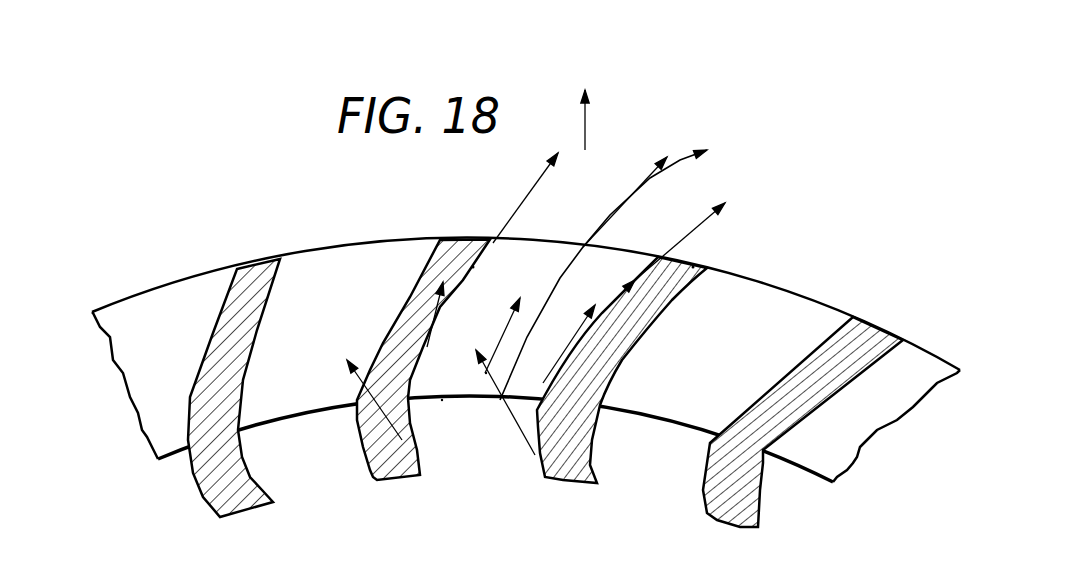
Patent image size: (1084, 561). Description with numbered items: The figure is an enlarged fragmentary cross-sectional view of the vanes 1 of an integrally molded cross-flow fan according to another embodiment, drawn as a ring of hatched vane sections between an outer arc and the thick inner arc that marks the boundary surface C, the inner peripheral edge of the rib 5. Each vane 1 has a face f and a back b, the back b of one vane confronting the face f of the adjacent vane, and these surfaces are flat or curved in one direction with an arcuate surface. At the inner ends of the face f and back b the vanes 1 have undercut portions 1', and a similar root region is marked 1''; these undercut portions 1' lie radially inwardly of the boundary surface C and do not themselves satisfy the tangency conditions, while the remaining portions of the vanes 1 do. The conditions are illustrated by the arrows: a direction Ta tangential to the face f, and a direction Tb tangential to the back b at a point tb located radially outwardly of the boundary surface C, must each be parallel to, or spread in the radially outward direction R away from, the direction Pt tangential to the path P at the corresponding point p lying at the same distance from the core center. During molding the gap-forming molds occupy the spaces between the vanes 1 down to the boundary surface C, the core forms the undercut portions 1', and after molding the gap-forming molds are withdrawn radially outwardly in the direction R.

The vane 1 is at (545, 368).
The undercut portion 1' is at (417, 387).
The blade root portion 1'' is at (622, 395).
The rib 5 is at (833, 312).
The back b is at (473, 267).
The face f is at (693, 267).
The boundary surface C is at (442, 400).
The point p is at (498, 372).
The radially outward direction R is at (595, 120).
The tangential direction to the face Ta is at (616, 326).
The tangential direction to the back Tb is at (439, 295).
The point on the back tb is at (429, 385).
The tangential direction to the path Pt is at (576, 261).
The path P is at (614, 265).